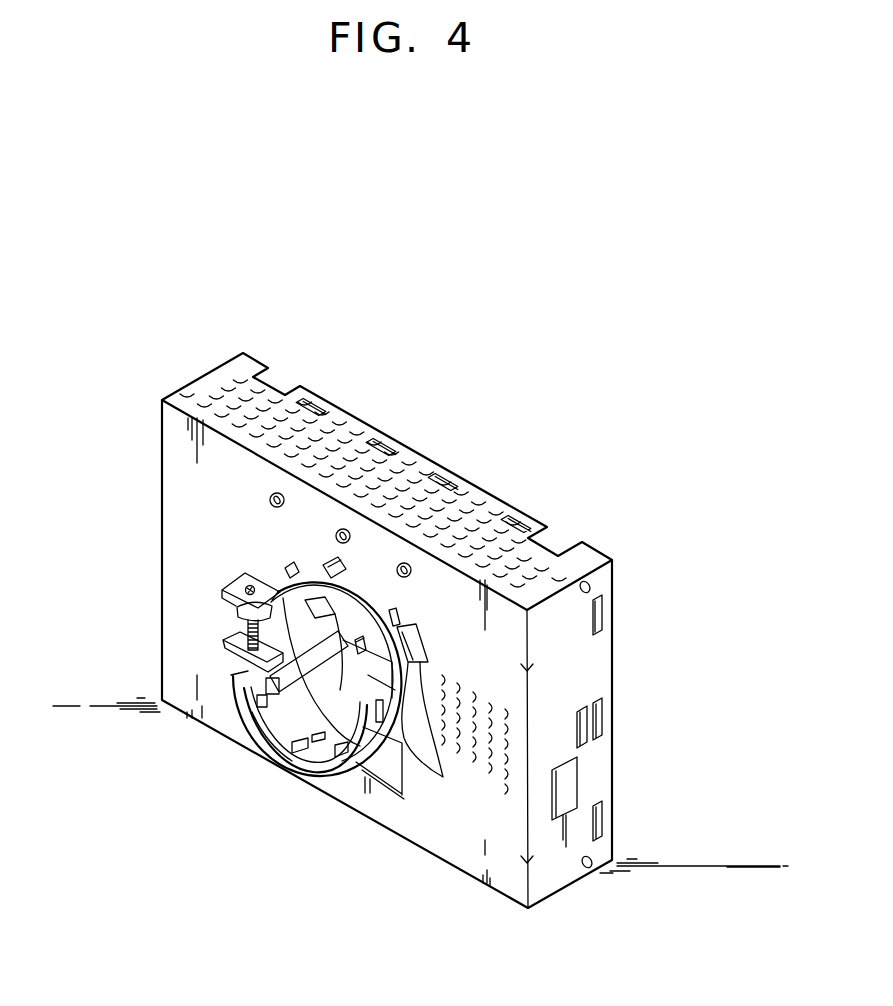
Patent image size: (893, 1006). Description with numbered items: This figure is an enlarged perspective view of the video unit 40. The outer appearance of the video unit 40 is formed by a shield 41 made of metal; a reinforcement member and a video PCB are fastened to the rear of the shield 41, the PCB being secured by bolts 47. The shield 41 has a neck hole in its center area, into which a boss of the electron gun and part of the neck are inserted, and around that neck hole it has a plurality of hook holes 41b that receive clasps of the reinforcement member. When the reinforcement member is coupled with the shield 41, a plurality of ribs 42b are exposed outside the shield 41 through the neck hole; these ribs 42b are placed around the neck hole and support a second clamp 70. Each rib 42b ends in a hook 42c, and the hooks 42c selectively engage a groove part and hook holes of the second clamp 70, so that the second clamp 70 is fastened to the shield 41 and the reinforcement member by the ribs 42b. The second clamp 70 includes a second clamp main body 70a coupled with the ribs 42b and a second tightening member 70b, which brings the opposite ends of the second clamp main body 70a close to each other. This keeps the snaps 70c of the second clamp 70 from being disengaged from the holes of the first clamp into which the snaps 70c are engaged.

The video unit 40 is at (391, 404).
The shield 41 is at (613, 632).
The hook holes 41b is at (343, 650).
The ribs 42b is at (232, 672).
The hook 42c is at (322, 562).
The bolts 47 is at (345, 529).
The second clamp 70 is at (296, 773).
The second clamp main body 70a is at (250, 722).
The second tightening member 70b is at (222, 634).
The snaps 70c is at (280, 750).